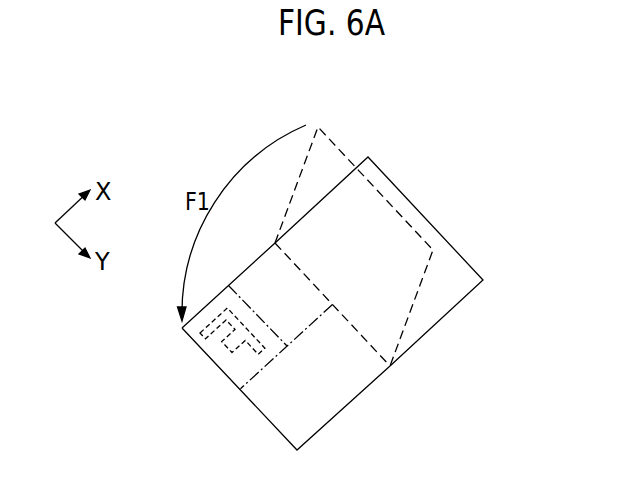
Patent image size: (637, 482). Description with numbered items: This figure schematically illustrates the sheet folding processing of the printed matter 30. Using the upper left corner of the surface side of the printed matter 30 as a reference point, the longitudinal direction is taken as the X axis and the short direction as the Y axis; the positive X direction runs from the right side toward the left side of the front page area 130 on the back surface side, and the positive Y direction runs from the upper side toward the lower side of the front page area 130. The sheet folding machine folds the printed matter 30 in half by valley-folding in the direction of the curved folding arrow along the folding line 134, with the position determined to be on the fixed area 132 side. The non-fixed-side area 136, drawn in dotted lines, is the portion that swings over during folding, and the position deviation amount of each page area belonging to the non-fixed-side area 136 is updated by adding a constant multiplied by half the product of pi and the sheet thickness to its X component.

The printed matter 30 is at (185, 152).
The front page area 130 is at (233, 362).
The fixed area 132 is at (274, 410).
The folding line 134 is at (379, 352).
The non-fixed-side area 136 is at (331, 141).